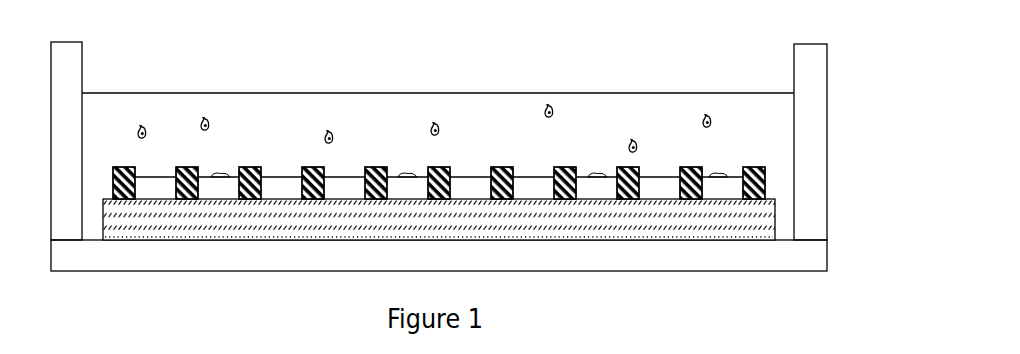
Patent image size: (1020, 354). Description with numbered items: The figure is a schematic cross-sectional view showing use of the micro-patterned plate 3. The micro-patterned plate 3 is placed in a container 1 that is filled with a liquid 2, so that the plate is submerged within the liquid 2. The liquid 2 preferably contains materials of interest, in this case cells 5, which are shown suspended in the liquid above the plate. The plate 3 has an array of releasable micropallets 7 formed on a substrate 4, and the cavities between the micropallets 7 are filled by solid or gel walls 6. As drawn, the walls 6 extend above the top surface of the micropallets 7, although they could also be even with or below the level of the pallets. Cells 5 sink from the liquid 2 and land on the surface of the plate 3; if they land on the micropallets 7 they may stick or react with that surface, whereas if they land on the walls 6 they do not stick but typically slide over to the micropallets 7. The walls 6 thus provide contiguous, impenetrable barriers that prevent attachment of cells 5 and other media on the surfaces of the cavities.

The container 1 is at (85, 80).
The liquid 2 is at (263, 105).
The micro-patterned plate 3 is at (349, 169).
The substrate 4 is at (783, 222).
The cells 5 is at (596, 166).
The walls 6 is at (754, 167).
The micropallets 7 is at (476, 175).